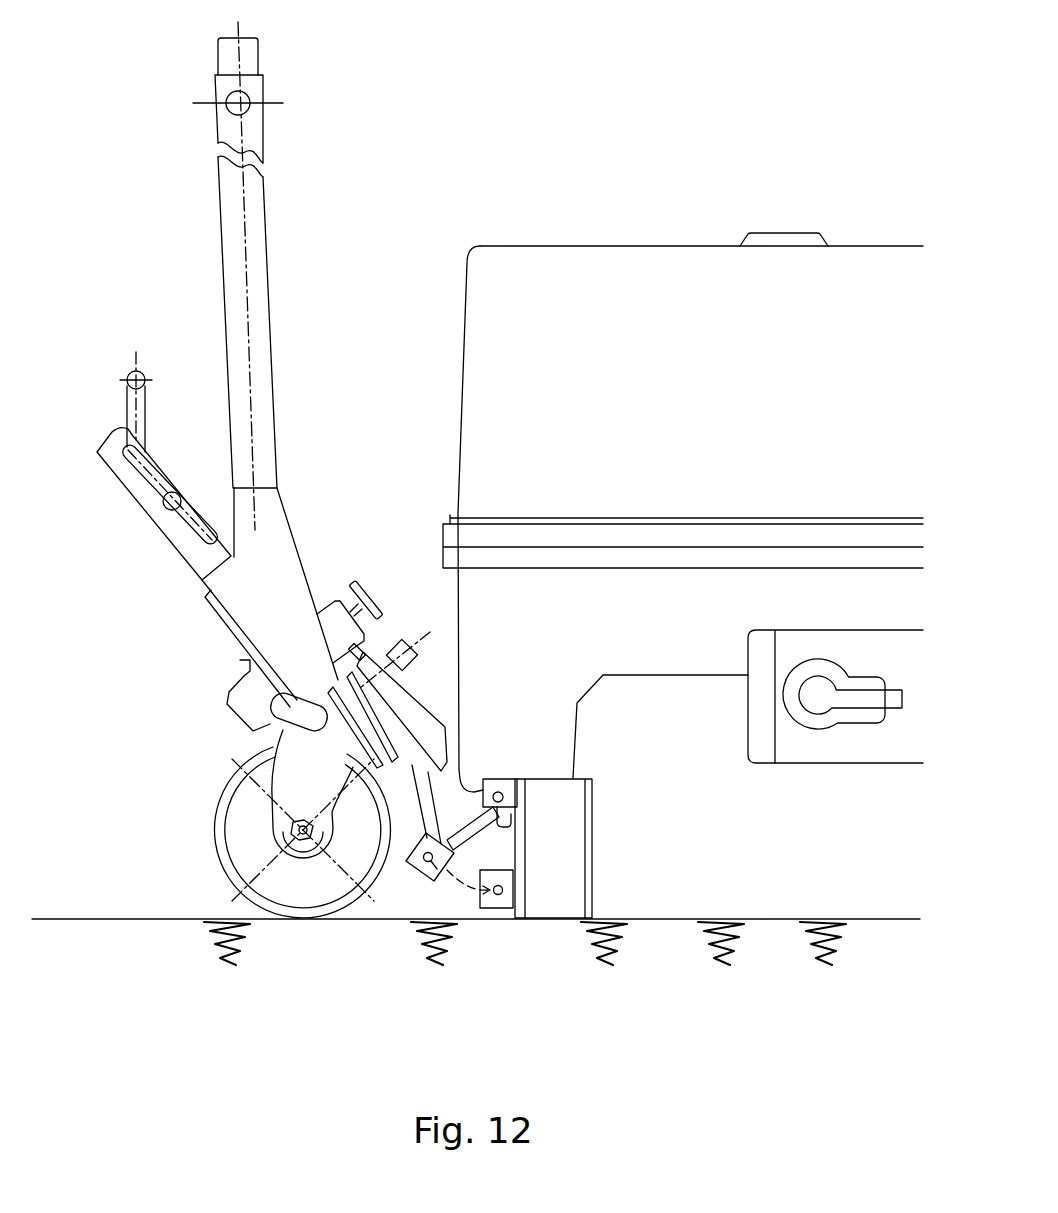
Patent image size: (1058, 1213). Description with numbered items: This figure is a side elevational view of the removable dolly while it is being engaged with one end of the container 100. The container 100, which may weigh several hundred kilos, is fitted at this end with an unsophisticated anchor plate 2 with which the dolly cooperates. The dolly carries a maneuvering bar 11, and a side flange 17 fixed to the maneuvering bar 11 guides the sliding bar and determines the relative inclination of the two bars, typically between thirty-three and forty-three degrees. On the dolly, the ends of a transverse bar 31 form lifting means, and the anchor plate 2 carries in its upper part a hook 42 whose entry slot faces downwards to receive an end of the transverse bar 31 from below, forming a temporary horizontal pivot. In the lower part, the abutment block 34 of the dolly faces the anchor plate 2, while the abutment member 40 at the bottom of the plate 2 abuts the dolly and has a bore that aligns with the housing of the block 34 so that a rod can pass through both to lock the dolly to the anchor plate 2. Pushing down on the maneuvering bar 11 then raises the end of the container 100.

The maneuvering bar 11 is at (268, 212).
The side flange 17 is at (140, 512).
The container 100 is at (600, 246).
The hook 42 is at (472, 790).
The transverse bar 31 is at (507, 823).
The anchor plate 2 is at (527, 855).
The abutment block 34 is at (413, 863).
The abutment member 40 is at (502, 913).